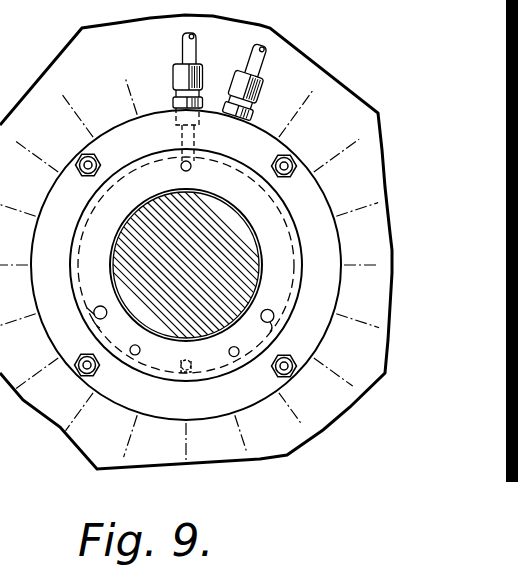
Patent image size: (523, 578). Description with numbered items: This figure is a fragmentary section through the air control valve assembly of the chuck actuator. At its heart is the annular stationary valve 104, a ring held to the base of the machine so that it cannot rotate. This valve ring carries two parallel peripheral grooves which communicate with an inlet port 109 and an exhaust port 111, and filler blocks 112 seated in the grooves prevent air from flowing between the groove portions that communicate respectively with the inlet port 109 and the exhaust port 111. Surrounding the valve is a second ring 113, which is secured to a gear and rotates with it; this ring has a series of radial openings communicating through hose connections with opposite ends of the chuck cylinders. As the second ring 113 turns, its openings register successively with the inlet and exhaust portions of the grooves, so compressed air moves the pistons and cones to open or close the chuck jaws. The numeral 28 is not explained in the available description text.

The second ring 113 is at (115, 132).
The annular stationary valve 104 is at (270, 210).
The filler blocks 112 is at (298, 288).
The central bore 28 is at (244, 268).
The exhaust port 111 is at (193, 166).
The inlet port 109 is at (274, 318).